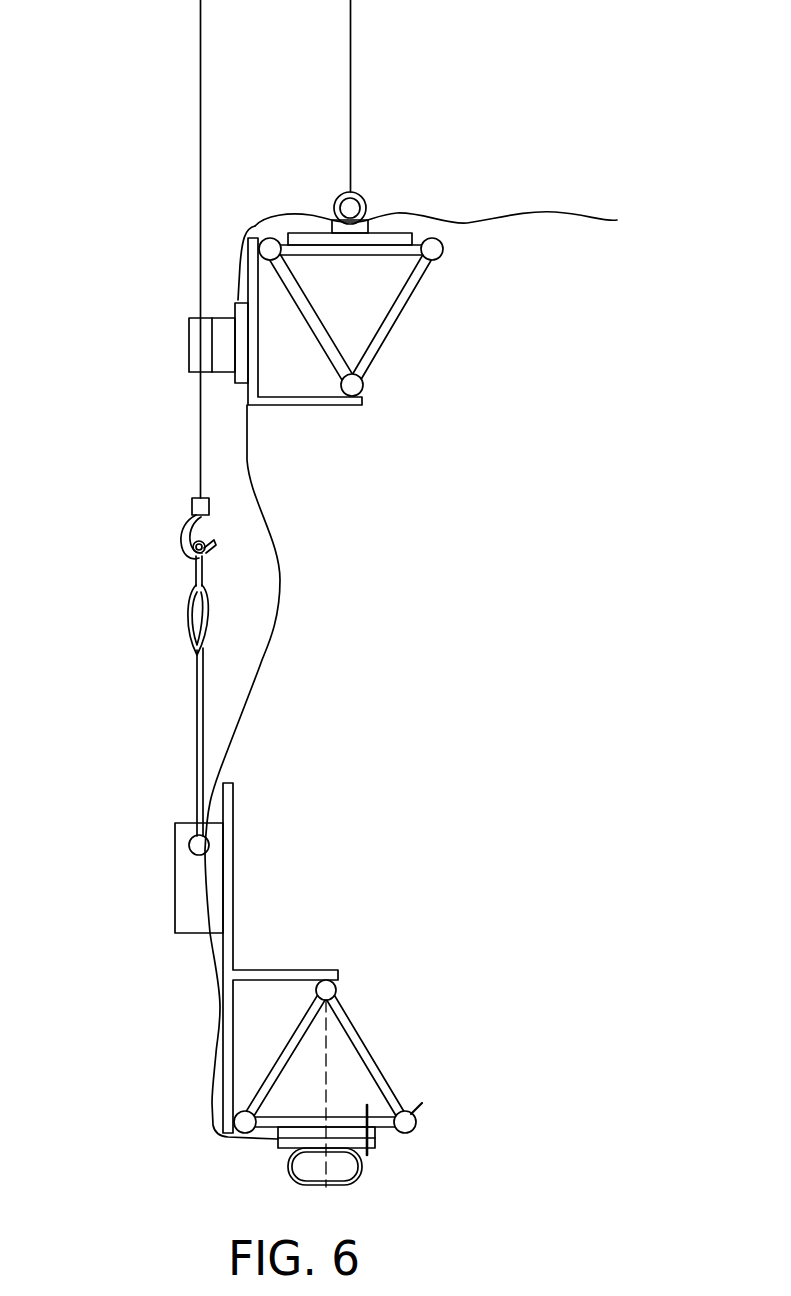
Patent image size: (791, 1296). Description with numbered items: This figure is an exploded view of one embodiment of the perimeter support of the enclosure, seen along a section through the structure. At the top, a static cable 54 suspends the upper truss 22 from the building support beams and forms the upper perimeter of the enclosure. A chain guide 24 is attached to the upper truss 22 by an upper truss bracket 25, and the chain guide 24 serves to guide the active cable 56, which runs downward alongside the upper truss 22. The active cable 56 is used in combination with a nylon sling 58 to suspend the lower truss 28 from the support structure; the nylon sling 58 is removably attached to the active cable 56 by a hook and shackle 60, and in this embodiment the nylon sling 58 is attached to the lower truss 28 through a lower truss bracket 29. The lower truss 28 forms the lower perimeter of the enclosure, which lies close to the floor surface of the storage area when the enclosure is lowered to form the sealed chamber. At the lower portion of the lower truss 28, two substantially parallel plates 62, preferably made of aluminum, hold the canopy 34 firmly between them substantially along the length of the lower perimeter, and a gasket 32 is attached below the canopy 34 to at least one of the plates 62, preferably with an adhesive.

The upper truss 22 is at (402, 320).
The chain guide 24 is at (189, 346).
The upper truss bracket 25 is at (303, 407).
The lower truss 28 is at (380, 1052).
The lower truss bracket 29 is at (265, 900).
The gasket 32 is at (288, 1170).
The canopy 34 is at (250, 687).
The static cable 54 is at (350, 97).
The active cable 56 is at (200, 122).
The nylon sling 58 is at (195, 718).
The hook and shackle 60 is at (183, 543).
The plates 62 is at (380, 1142).